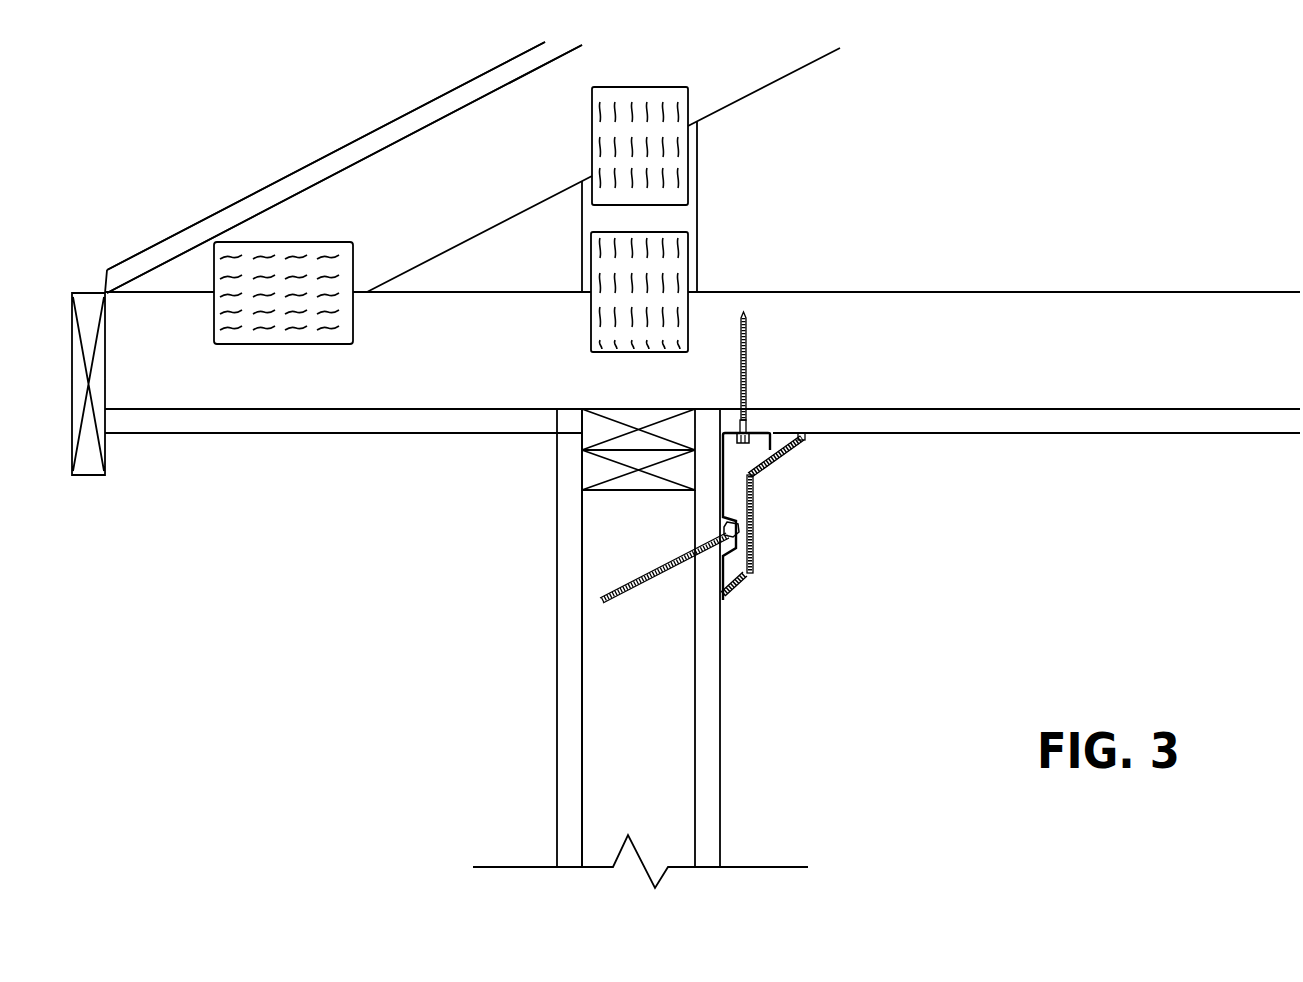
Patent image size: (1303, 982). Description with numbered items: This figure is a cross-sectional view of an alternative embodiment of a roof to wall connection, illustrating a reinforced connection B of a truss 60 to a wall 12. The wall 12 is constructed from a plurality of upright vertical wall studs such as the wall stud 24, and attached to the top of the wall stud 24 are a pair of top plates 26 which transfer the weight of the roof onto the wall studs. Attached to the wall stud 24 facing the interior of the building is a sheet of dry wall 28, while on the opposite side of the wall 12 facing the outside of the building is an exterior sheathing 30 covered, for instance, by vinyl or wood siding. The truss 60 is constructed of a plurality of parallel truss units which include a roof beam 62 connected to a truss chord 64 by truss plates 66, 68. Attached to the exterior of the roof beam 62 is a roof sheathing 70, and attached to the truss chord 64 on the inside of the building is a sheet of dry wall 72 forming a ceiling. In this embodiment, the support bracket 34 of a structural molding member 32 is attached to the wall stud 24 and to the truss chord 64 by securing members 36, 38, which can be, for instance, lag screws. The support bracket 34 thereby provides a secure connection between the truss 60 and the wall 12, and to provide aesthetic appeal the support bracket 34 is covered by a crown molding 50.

The wall 12 is at (598, 758).
The wall stud 24 is at (680, 728).
The top plates 26 is at (592, 463).
The dry wall 28 is at (708, 790).
The exterior sheathing 30 is at (573, 673).
The structural molding member 32 is at (815, 543).
The support bracket 34 is at (723, 488).
The securing member 36 is at (747, 368).
The securing member 38 is at (647, 577).
The crown molding 50 is at (783, 462).
The truss 60 is at (355, 200).
The roof beam 62 is at (776, 66).
The truss chord 64 is at (1027, 317).
The truss plate 66 is at (655, 218).
The truss plate 68 is at (340, 257).
The roof sheathing 70 is at (410, 120).
The dry wall 72 is at (1055, 418).
The reinforced connection B is at (935, 527).